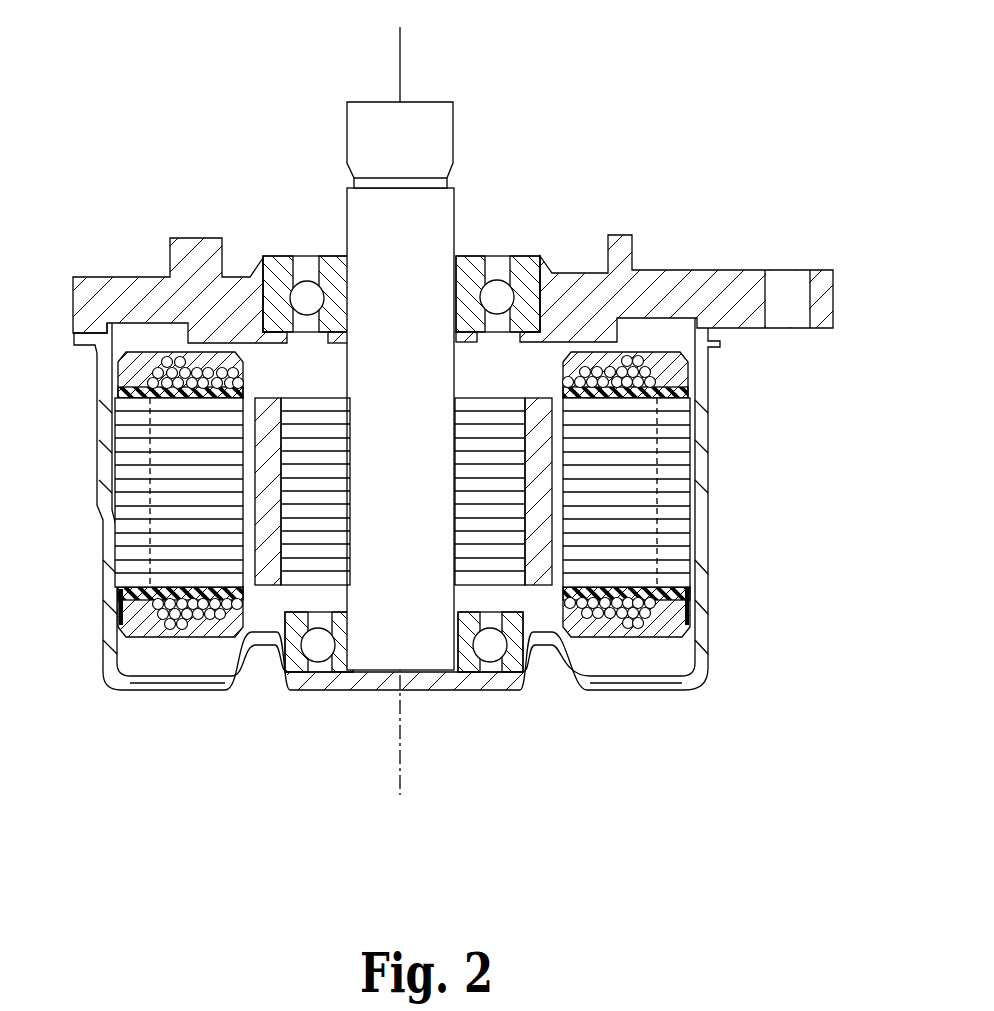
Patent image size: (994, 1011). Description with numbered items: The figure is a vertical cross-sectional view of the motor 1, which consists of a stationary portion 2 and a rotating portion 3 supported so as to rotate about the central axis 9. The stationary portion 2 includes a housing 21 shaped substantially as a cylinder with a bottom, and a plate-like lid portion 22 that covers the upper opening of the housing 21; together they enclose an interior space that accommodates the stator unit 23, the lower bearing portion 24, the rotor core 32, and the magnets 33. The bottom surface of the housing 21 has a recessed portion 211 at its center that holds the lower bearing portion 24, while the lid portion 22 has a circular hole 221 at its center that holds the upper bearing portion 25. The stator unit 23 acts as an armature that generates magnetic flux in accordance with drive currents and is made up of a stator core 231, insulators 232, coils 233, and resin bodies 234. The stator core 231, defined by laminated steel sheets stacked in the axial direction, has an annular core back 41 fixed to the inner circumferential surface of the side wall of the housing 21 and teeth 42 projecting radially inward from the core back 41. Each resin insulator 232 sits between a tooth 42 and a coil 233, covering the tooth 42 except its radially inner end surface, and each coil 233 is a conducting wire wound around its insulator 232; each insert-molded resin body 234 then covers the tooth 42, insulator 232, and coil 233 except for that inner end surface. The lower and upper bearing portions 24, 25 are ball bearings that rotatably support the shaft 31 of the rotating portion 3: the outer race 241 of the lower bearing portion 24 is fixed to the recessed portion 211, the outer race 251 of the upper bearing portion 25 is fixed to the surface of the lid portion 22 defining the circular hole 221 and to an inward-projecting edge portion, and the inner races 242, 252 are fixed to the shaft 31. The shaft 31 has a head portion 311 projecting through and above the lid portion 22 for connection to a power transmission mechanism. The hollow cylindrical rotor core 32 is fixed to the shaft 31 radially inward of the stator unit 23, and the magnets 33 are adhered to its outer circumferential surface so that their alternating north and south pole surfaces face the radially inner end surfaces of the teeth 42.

The motor 1 is at (207, 115).
The central axis 9 is at (400, 50).
The stationary portion 2 is at (753, 255).
The housing 21 is at (672, 696).
The recessed portion 211 is at (530, 678).
The lid portion 22 is at (658, 290).
The circular hole 221 is at (525, 283).
The stator unit 23 is at (95, 802).
The stator core 231 is at (381, 599).
The insulator 232 is at (180, 627).
The coil 233 is at (198, 612).
The resin body 234 is at (227, 625).
The lower bearing portion 24 is at (390, 748).
The outer race 241 is at (297, 657).
The inner race 242 is at (342, 657).
The upper bearing portion 25 is at (240, 190).
The outer race 251 is at (282, 280).
The inner race 252 is at (335, 280).
The rotating portion 3 is at (277, 382).
The shaft 31 is at (431, 379).
The head portion 311 is at (430, 132).
The rotor core 32 is at (502, 523).
The magnet 33 is at (540, 438).
The core back 41 is at (133, 540).
The tooth 42 is at (175, 540).